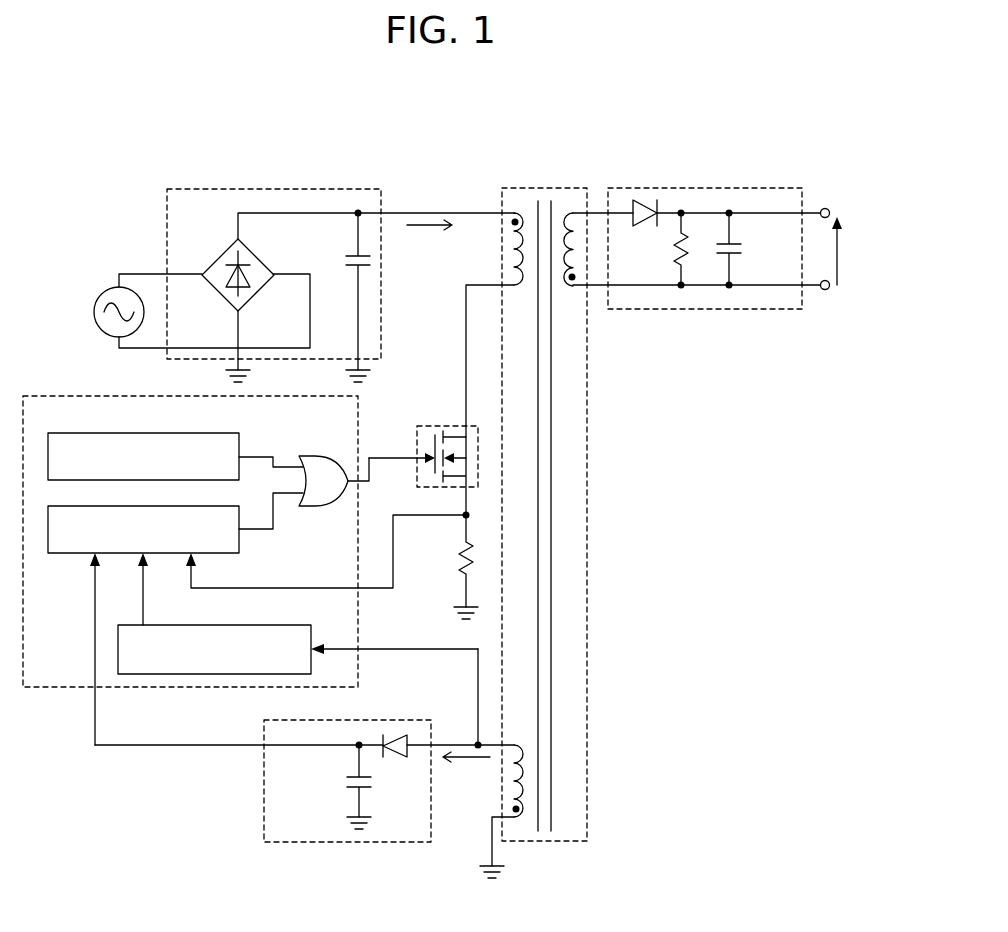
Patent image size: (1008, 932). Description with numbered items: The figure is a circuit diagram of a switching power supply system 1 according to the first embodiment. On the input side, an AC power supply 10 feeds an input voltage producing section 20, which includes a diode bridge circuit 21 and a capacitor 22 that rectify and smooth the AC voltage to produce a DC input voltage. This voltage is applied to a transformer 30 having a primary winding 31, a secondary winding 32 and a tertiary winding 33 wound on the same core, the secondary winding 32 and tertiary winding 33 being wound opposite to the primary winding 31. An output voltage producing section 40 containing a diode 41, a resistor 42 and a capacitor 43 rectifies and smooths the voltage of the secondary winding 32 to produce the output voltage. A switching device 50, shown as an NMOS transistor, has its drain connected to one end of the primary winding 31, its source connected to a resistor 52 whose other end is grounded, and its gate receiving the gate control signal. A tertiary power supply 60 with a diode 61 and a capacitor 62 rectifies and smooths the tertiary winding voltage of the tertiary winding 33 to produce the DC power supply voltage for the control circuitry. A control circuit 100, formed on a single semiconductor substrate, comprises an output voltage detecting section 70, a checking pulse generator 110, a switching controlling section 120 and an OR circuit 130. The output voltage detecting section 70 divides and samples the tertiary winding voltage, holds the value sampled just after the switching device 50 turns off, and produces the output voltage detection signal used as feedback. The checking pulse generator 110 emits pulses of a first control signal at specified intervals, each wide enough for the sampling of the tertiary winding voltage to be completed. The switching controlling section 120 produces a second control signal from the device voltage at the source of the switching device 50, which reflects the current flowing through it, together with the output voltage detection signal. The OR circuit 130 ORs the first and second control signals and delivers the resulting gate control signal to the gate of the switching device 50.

The switching power supply device 1 is at (808, 151).
The AC power supply 10 is at (92, 312).
The input voltage producing section 20 is at (280, 187).
The diode bridge circuit 21 is at (220, 253).
The capacitor 22 is at (345, 256).
The transformer 30 is at (548, 186).
The primary winding 31 is at (516, 211).
The secondary winding 32 is at (570, 212).
The tertiary winding 33 is at (519, 743).
The output voltage producing section 40 is at (718, 186).
The diode 41 is at (647, 199).
The resistor 42 is at (675, 246).
The capacitor 43 is at (745, 252).
The switching device 50 is at (436, 424).
The resistor 52 is at (460, 560).
The tertiary power supply 60 is at (262, 720).
The diode 61 is at (402, 758).
The capacitor 62 is at (345, 783).
The output voltage detecting section 70 is at (242, 625).
The control circuit 100 is at (358, 689).
The checking pulse generator 110 is at (105, 432).
The switching controlling section 120 is at (105, 505).
The OR circuit 130 is at (318, 455).